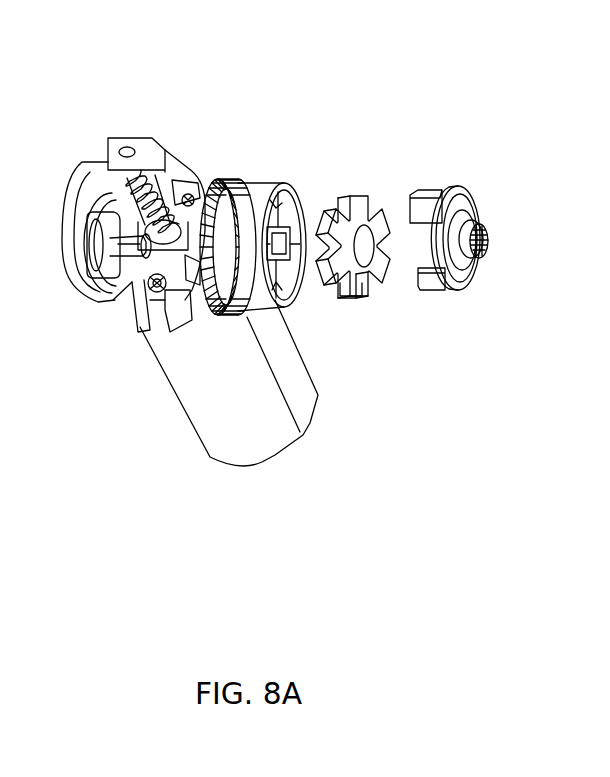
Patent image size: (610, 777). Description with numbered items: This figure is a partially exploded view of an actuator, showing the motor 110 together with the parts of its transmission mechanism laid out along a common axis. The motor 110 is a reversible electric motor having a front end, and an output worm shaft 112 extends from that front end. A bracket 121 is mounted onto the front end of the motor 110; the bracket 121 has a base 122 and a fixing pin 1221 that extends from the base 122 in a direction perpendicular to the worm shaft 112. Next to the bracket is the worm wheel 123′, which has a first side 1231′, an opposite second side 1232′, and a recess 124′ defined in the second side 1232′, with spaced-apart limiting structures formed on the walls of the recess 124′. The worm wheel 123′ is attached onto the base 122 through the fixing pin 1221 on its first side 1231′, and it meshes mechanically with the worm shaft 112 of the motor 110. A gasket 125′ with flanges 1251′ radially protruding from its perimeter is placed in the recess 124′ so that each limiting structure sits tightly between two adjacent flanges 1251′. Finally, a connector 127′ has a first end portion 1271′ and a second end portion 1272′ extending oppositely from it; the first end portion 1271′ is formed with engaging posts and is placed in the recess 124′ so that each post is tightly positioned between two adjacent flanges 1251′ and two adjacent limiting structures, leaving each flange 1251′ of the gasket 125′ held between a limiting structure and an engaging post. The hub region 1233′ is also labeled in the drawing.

The motor 110 is at (257, 430).
The worm shaft 112 is at (165, 150).
The bracket 121 is at (116, 142).
The base 122 is at (88, 243).
The fixing pin 1221 is at (132, 243).
The worm wheel 123′ is at (222, 180).
The first side 1231′ is at (193, 268).
The second side 1232′ is at (272, 287).
The hub 1233′ is at (278, 253).
The recess 124′ is at (282, 212).
The gasket 125′ is at (375, 222).
The flanges 1251′ is at (362, 297).
The connector 127′ is at (463, 195).
The first end portion 1271′ is at (428, 280).
The second end portion 1272′ is at (478, 247).